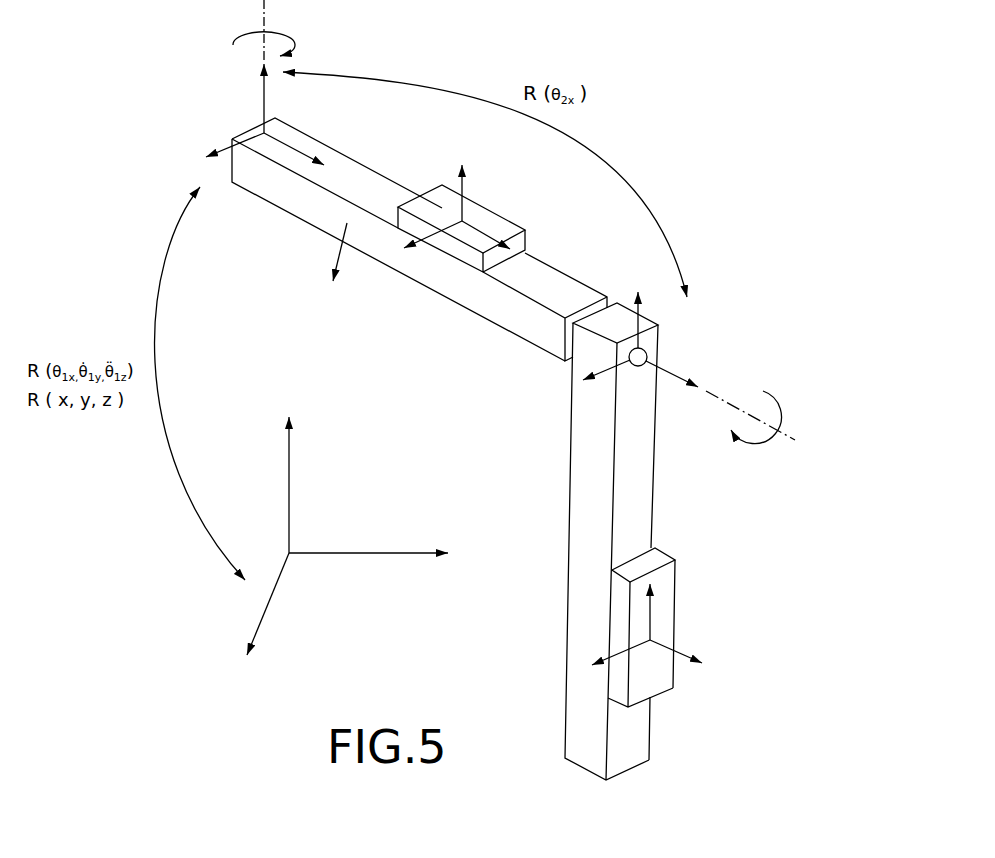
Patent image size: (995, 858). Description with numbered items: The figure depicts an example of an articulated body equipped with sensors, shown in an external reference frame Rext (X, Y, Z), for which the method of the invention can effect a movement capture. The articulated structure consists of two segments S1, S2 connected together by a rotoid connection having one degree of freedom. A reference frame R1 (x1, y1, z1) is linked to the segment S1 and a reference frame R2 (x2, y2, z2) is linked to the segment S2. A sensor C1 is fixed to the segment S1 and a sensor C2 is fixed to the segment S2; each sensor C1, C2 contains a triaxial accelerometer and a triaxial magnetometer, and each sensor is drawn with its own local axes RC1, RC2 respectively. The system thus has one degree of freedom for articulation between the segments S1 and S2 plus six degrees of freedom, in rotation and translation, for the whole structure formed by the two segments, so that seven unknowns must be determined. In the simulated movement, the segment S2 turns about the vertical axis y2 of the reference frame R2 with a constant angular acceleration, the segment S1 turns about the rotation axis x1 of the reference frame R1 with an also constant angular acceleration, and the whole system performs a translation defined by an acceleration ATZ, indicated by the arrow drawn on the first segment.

The segment S1 is at (488, 307).
The segment S2 is at (640, 468).
The sensor C1 is at (478, 213).
The sensor C2 is at (667, 591).
The reference frame R1 is at (248, 133).
The reference frame R2 is at (658, 352).
The first carriage reference frame RC1 is at (457, 197).
The second carriage reference frame RC2 is at (666, 640).
The acceleration ATZ is at (308, 256).
The reference frame Rext is at (353, 538).